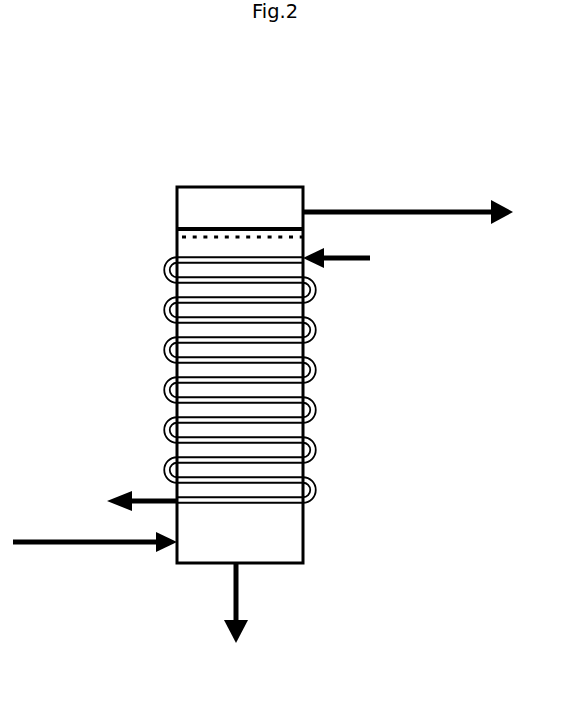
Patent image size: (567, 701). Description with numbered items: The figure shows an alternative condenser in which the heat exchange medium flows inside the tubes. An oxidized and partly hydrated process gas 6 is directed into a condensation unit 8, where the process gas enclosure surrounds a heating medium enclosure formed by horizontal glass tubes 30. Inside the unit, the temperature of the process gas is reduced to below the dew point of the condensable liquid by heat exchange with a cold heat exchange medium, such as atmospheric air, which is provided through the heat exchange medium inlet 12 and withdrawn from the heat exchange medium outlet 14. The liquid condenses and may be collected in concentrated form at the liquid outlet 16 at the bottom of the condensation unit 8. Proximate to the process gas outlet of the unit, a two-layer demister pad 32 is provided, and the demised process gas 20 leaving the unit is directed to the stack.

The condensation unit 8 is at (190, 188).
The two-layer demister pad 32 is at (177, 232).
The horizontal glass tubes 30 is at (303, 358).
The demised process gas 20 is at (456, 210).
The heat exchange medium inlet 12 is at (352, 262).
The heat exchange medium outlet 14 is at (142, 499).
The process gas 6 is at (135, 545).
The liquid outlet 16 is at (239, 583).